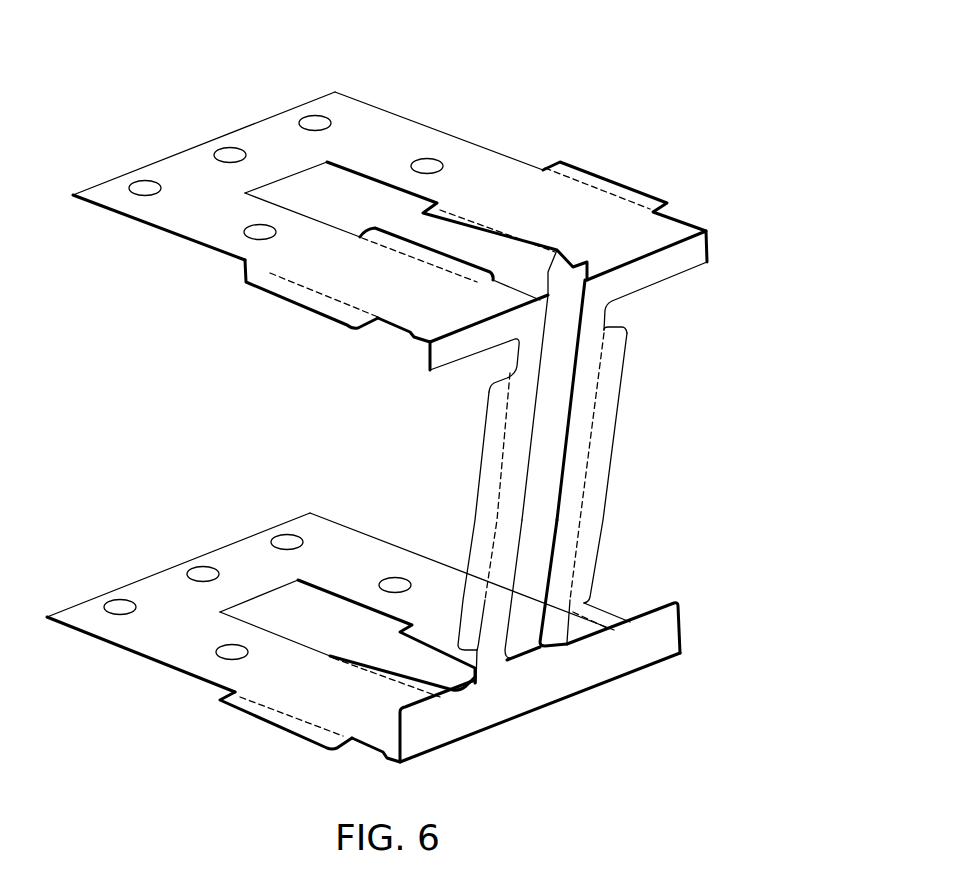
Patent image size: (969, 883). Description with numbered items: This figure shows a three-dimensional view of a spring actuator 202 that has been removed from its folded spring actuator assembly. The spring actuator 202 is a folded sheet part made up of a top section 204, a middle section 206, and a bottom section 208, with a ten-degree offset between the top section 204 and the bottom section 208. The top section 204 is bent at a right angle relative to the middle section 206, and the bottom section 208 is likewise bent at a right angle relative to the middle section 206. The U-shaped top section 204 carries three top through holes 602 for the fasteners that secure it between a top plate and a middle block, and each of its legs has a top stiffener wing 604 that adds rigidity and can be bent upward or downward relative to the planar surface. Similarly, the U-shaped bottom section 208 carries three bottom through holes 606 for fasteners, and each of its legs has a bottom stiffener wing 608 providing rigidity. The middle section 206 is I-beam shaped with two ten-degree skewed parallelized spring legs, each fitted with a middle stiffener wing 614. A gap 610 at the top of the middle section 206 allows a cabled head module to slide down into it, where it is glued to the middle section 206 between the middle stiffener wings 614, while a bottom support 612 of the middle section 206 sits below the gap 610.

The spring actuator 202 is at (190, 92).
The top section 204 is at (500, 172).
The middle section 206 is at (692, 255).
The bottom section 208 is at (137, 635).
The top through holes 602 is at (264, 226).
The top stiffener wings 604 is at (513, 240).
The bottom through holes 606 is at (305, 518).
The bottom stiffener wings 608 is at (602, 618).
The gap 610 is at (560, 279).
The bottom support 612 is at (525, 653).
The middle stiffener wings 614 is at (490, 482).